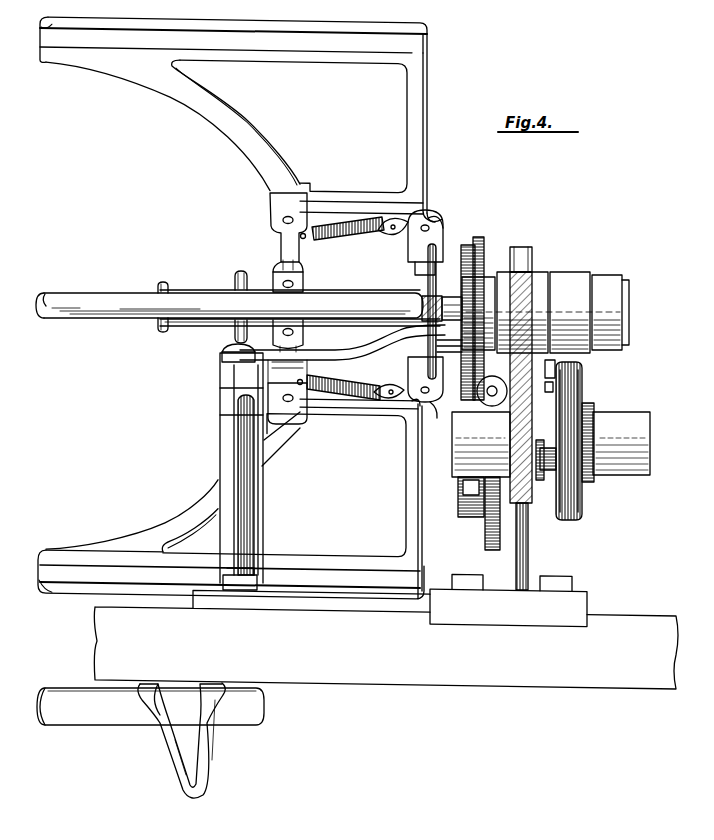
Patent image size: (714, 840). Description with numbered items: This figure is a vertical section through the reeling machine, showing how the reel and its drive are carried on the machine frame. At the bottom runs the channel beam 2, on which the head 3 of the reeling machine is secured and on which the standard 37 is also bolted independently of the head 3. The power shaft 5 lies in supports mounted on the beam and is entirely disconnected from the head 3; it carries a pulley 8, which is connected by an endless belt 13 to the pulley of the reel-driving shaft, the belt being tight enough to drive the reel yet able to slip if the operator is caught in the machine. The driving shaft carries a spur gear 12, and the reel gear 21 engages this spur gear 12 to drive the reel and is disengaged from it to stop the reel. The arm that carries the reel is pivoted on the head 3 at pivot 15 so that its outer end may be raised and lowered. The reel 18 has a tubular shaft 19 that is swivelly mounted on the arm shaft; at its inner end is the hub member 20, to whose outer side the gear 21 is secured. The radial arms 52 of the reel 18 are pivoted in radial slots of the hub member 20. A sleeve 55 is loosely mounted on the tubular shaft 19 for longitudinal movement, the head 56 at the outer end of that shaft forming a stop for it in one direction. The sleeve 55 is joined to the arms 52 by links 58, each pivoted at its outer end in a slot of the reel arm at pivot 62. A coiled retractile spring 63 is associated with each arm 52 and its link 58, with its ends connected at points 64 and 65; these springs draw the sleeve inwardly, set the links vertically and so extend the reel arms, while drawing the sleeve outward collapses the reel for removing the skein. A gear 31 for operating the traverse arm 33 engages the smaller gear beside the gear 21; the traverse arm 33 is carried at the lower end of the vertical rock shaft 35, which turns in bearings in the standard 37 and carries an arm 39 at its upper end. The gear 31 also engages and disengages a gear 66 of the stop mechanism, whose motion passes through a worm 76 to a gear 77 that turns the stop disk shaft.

The channel beam 2 is at (630, 620).
The head 3 is at (522, 556).
The power shaft 5 is at (640, 440).
The pulley 8 is at (583, 515).
The spur gear 12 is at (462, 488).
The endless belt 13 is at (566, 396).
The pivot 15 is at (632, 305).
The reel 18 is at (241, 119).
The tubular shaft 19 is at (350, 292).
The hub member 20 is at (428, 276).
The gear 21 is at (467, 244).
The gear 31 is at (483, 240).
The traverse arm 33 is at (218, 764).
The vertical rock shaft 35 is at (228, 352).
The standard 37 is at (230, 452).
The arm 39 is at (376, 352).
The radial arms 52 is at (412, 92).
The sleeve 55 is at (257, 288).
The head 56 is at (163, 330).
The links 58 is at (282, 238).
The pivot 62 is at (283, 220).
The coiled retractile spring 63 is at (357, 236).
The spring end connection 64 is at (432, 218).
The spring end connection 65 is at (303, 240).
The gear 66 is at (476, 516).
The worm 76 is at (582, 375).
The gear 77 is at (491, 550).